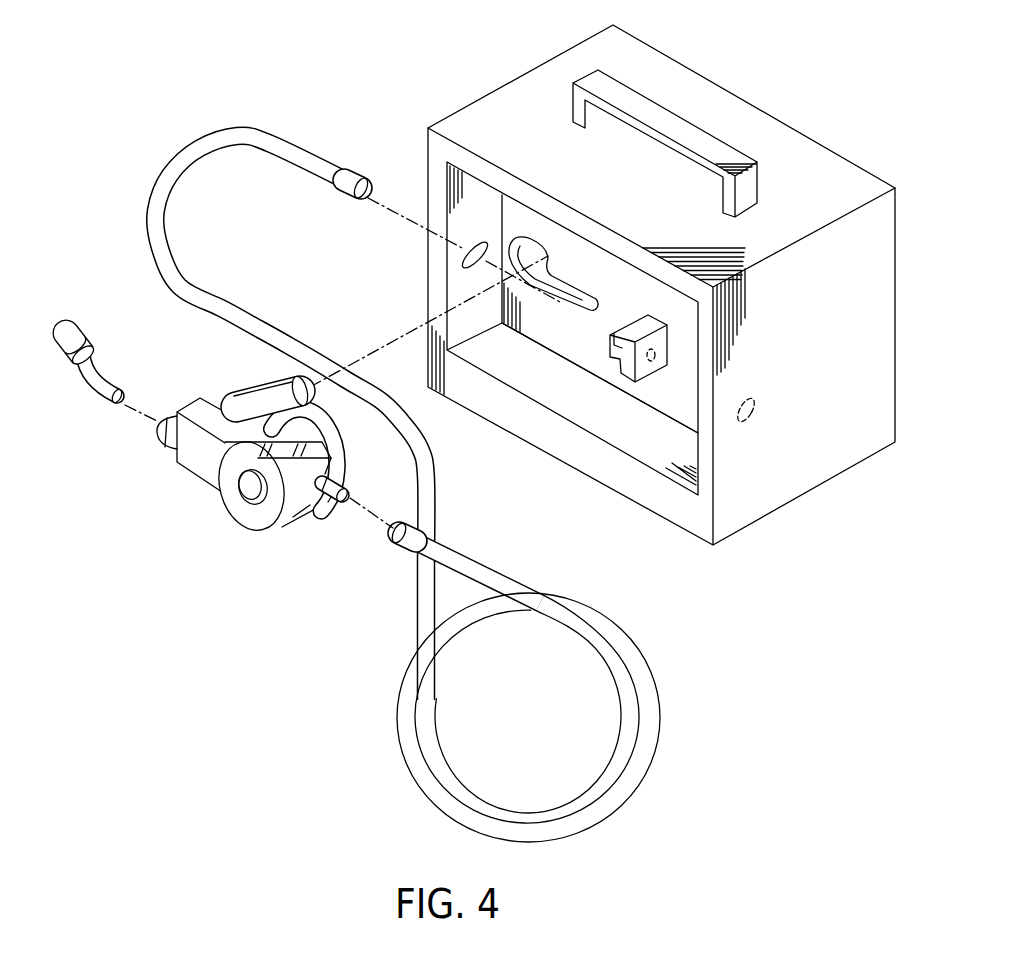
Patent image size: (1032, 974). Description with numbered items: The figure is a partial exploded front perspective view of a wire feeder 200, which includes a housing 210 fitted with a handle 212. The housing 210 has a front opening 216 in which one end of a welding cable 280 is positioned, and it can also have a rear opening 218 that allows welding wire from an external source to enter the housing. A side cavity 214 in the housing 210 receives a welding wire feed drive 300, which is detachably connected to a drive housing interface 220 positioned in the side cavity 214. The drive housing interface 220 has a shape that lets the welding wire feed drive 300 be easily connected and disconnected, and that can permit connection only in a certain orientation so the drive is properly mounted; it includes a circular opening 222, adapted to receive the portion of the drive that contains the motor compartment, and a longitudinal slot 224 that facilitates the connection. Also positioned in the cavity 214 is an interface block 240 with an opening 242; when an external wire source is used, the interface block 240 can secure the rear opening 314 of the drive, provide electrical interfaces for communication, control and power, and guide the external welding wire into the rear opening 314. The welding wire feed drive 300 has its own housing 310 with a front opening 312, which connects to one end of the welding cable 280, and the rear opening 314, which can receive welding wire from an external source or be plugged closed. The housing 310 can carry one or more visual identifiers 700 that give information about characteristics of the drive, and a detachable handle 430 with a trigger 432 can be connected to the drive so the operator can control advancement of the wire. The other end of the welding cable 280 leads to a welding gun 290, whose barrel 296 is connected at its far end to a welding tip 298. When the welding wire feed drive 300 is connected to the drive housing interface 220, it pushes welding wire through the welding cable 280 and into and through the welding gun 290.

The wire feeder 200 is at (512, 56).
The housing 210 is at (720, 98).
The handle 212 is at (720, 145).
The side cavity 214 is at (662, 302).
The front opening 216 is at (465, 262).
The rear opening 218 is at (755, 412).
The drive housing interface 220 is at (605, 332).
The circular opening 222 is at (530, 250).
The longitudinal slot 224 is at (574, 279).
The interface block 240 is at (630, 360).
The opening 242 is at (665, 352).
The welding cable 280 is at (290, 143).
The welding gun 290 is at (202, 490).
The barrel 296 is at (102, 392).
The welding tip 298 is at (78, 342).
The welding wire feed drive 300 is at (265, 543).
The housing 310 is at (293, 510).
The front opening 312 is at (162, 444).
The rear opening 314 is at (350, 488).
The handle 430 is at (267, 395).
The trigger 432 is at (228, 404).
The visual identifiers 700 is at (278, 450).